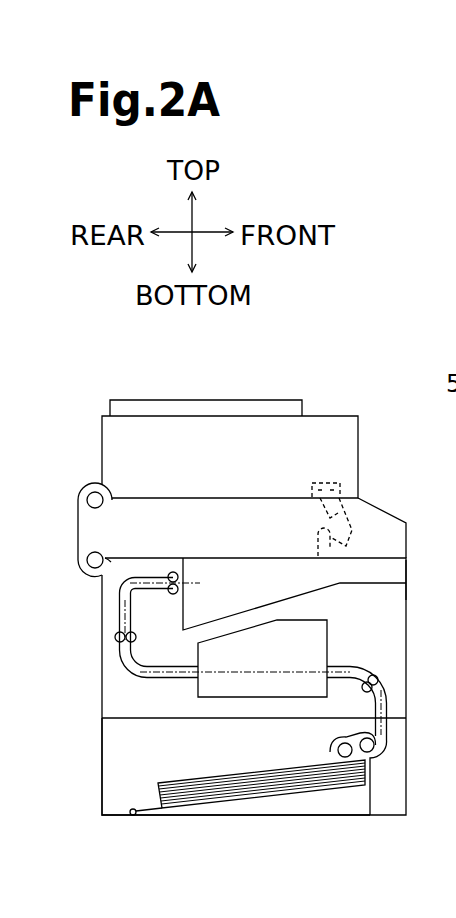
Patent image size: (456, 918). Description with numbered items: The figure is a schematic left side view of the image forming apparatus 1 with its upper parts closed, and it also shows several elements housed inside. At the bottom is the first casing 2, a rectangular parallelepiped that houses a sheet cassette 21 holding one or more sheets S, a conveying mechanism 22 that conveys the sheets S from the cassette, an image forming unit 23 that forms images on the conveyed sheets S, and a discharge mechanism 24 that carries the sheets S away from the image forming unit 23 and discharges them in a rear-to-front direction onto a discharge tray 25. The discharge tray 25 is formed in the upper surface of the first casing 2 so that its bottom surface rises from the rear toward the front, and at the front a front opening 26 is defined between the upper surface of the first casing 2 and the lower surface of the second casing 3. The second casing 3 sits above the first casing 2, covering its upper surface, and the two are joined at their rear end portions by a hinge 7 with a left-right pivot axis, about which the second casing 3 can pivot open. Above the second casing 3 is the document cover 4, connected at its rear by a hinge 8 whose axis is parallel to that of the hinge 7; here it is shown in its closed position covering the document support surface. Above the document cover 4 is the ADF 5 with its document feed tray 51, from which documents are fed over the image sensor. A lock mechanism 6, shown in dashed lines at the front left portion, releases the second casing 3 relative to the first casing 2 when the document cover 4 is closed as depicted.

The image forming apparatus 1 is at (101, 367).
The first casing 2 is at (411, 645).
The second casing 3 is at (411, 541).
The document cover 4 is at (364, 471).
The automatic document feeder 5 is at (288, 394).
The document feed tray 51 is at (211, 400).
The lock mechanism 6 is at (358, 520).
The hinge 7 is at (86, 566).
The hinge 8 is at (92, 491).
The sheet cassette 21 is at (409, 768).
The conveying mechanism 22 is at (394, 695).
The image forming unit 23 is at (329, 629).
The discharge mechanism 24 is at (117, 620).
The discharge tray 25 is at (241, 611).
The front opening 26 is at (408, 573).
The sheet S is at (240, 770).